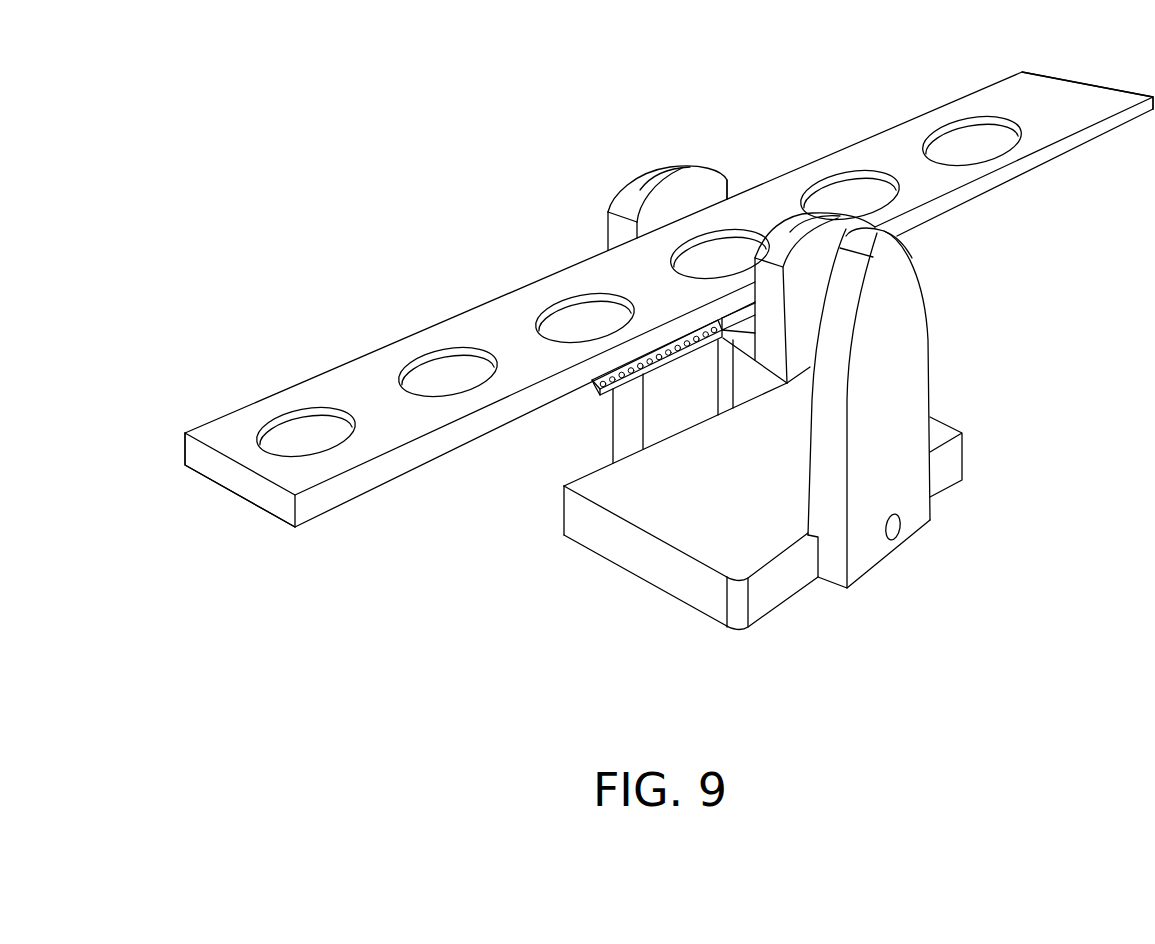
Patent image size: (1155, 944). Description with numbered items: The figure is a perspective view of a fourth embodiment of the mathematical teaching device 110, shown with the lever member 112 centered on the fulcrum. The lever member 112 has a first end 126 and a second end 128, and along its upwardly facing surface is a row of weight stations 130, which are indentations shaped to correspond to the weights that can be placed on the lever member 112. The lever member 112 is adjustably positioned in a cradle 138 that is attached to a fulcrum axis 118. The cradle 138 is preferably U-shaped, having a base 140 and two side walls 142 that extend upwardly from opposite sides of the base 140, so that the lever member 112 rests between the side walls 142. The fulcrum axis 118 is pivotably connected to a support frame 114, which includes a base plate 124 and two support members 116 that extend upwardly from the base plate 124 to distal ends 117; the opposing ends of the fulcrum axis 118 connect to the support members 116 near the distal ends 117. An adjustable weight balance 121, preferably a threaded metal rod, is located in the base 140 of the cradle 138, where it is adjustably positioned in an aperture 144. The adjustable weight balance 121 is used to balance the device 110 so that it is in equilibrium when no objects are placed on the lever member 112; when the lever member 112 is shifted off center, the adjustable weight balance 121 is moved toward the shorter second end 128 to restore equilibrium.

The mathematical teaching device 110 is at (308, 186).
The lever member 112 is at (510, 290).
The support frame 114 is at (970, 373).
The support members 116 is at (912, 315).
The distal ends 117 is at (895, 248).
The fulcrum axis 118 is at (677, 172).
The adjustable weight balance 121 is at (588, 395).
The base plate 124 is at (695, 593).
The first end 126 is at (183, 452).
The second end 128 is at (990, 105).
The weight stations 130 is at (433, 373).
The cradle 138 is at (625, 205).
The base 140 is at (770, 353).
The side walls 142 is at (692, 213).
The aperture 144 is at (720, 362).